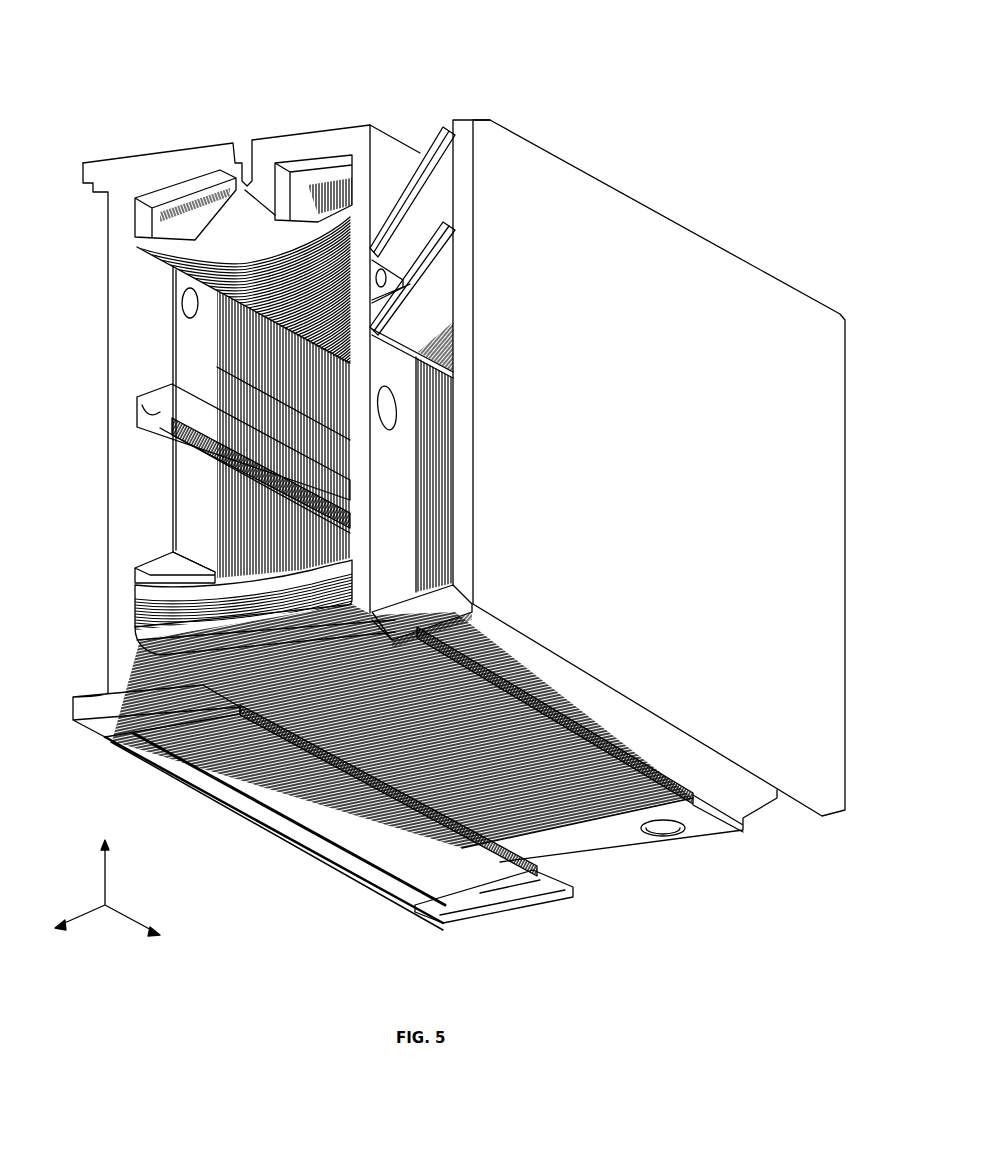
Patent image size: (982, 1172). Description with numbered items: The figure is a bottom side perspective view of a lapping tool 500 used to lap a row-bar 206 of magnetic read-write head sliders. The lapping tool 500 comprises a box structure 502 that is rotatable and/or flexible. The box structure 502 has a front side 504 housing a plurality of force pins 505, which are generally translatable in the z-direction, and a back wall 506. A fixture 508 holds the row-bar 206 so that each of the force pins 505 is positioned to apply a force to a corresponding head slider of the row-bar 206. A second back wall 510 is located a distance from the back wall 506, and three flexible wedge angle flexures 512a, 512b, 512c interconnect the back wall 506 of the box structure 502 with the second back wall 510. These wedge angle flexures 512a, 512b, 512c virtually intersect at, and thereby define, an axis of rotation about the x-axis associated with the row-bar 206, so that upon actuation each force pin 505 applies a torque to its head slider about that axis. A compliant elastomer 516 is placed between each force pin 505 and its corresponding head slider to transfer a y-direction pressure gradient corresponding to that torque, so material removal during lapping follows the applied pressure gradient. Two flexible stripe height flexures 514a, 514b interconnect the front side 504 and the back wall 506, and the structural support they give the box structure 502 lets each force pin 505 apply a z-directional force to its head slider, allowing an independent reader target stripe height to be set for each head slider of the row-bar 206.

The lapping tool 500 is at (160, 45).
The box structure 502 is at (183, 160).
The front side 504 is at (103, 358).
The force pins 505 is at (208, 455).
The back wall 506 is at (380, 150).
The fixture 508 is at (75, 700).
The second back wall 510 is at (663, 247).
The wedge angle flexure 512a is at (432, 175).
The wedge angle flexure 512b is at (430, 280).
The wedge angle flexure 512c is at (433, 603).
The stripe height flexure 514a is at (268, 250).
The stripe height flexure 514b is at (227, 592).
The compliant elastomer 516 is at (514, 888).
The row-bar 206 is at (270, 832).